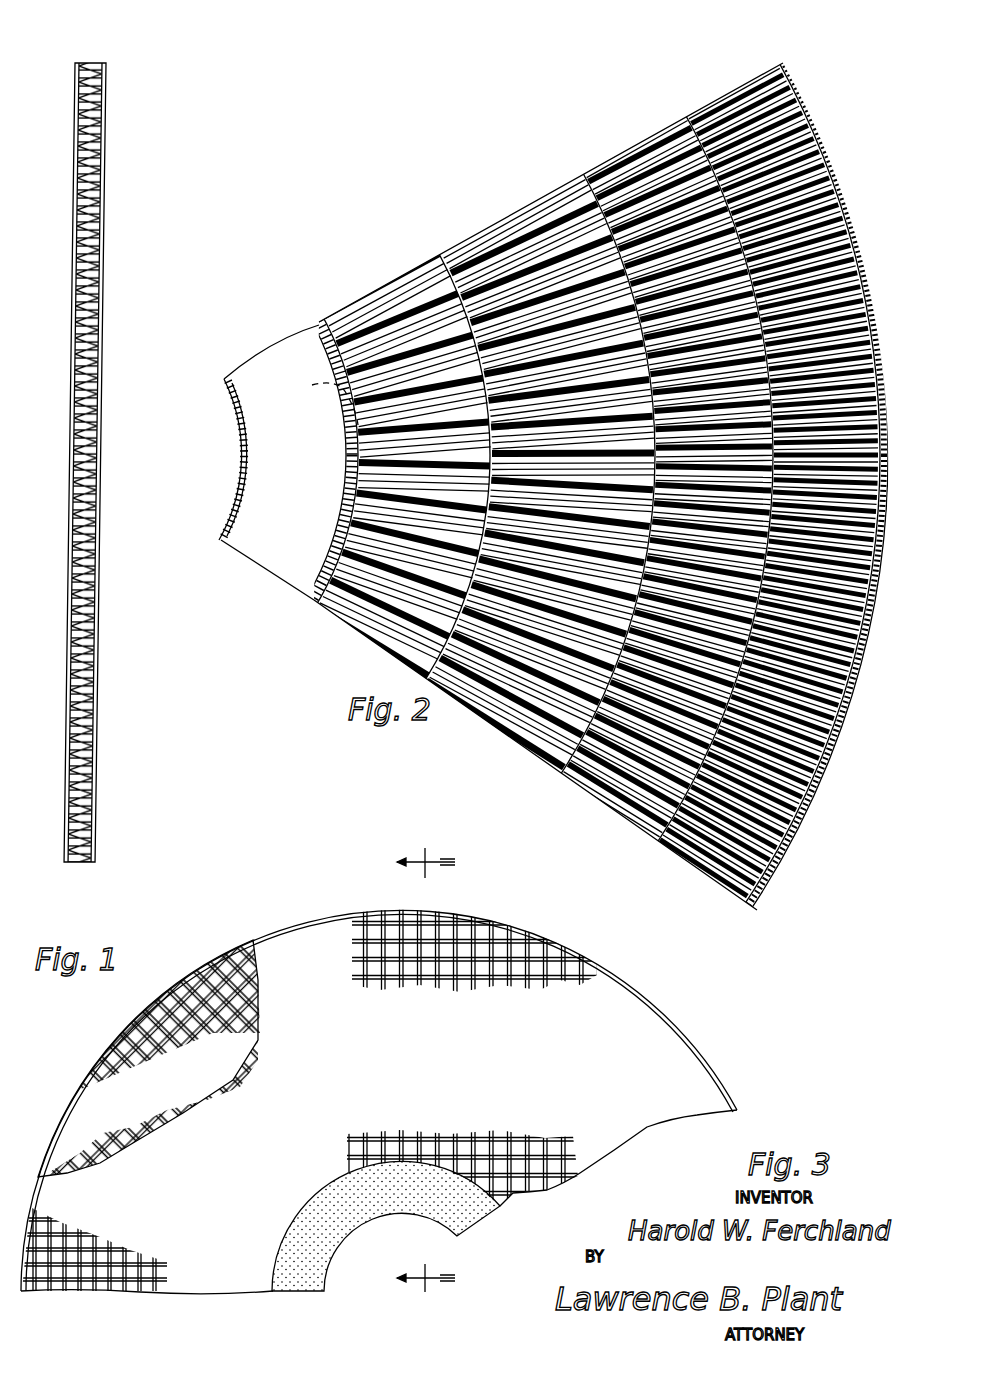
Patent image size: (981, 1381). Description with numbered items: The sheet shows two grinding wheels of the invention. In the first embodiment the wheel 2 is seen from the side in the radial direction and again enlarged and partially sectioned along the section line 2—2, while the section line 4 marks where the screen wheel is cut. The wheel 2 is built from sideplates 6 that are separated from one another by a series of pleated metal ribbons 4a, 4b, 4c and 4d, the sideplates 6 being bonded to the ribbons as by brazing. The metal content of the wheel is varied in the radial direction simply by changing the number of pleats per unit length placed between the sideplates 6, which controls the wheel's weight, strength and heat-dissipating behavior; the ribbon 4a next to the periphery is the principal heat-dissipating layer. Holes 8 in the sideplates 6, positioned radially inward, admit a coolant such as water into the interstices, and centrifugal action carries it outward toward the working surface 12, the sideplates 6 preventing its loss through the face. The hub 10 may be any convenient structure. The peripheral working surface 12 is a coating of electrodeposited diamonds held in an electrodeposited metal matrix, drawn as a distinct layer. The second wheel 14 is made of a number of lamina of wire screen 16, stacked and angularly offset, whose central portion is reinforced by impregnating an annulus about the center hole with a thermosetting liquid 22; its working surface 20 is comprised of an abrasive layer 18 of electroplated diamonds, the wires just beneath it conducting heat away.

In FIG. 1, the wheel 2 is at (50, 29).
In FIG. 2, the wheel 2 is at (460, 240).
In FIG. 3, the section line 4- 4 is at (411, 1070).
In FIG. 1, the pleated metal ribbon 4a is at (100, 306).
In FIG. 2, the pleated metal ribbon 4a is at (736, 93).
In FIG. 2, the pleated metal ribbon 4b is at (644, 140).
In FIG. 2, the pleated metal ribbon 4c is at (554, 192).
In FIG. 2, the pleated metal ribbon 4d is at (397, 290).
In FIG. 1, the sideplates 6 is at (75, 118).
In FIG. 2, the holes 8 is at (327, 403).
In FIG. 2, the hub 10 is at (312, 340).
In FIG. 2, the working surface 12 is at (843, 196).
In FIG. 3, the wheel 14 is at (690, 1010).
In FIG. 3, the wire screen 16 is at (543, 968).
In FIG. 3, the abrasive layer 18 is at (320, 921).
In FIG. 3, the working surface 20 is at (255, 945).
In FIG. 3, the thermosetting liquid 22 is at (477, 1200).